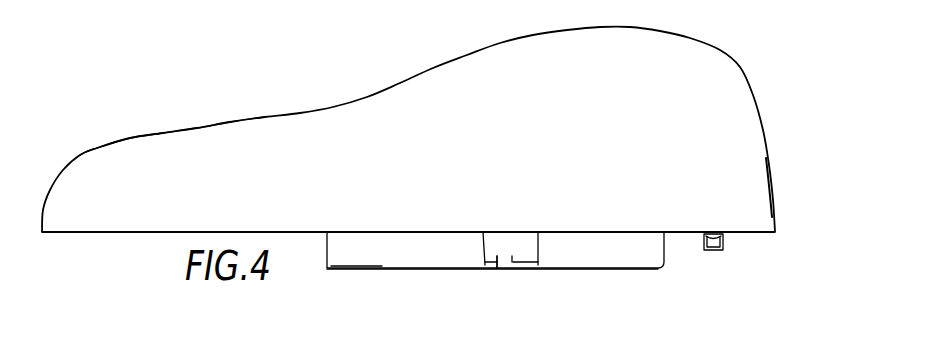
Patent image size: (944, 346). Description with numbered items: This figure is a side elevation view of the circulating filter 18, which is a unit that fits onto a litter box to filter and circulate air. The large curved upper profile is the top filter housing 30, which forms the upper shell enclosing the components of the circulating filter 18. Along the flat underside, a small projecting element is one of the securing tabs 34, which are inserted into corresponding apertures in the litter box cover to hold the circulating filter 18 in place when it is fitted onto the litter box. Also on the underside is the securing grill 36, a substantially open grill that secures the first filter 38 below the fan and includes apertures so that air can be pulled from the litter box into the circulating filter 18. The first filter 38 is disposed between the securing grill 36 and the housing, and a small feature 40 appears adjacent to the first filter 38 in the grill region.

The circulating filter 18 is at (367, 82).
The top filter housing 30 is at (197, 143).
The securing tabs 34 is at (714, 252).
The securing grill 36 is at (575, 270).
The first filter 38 is at (512, 259).
The tab 40 is at (499, 258).